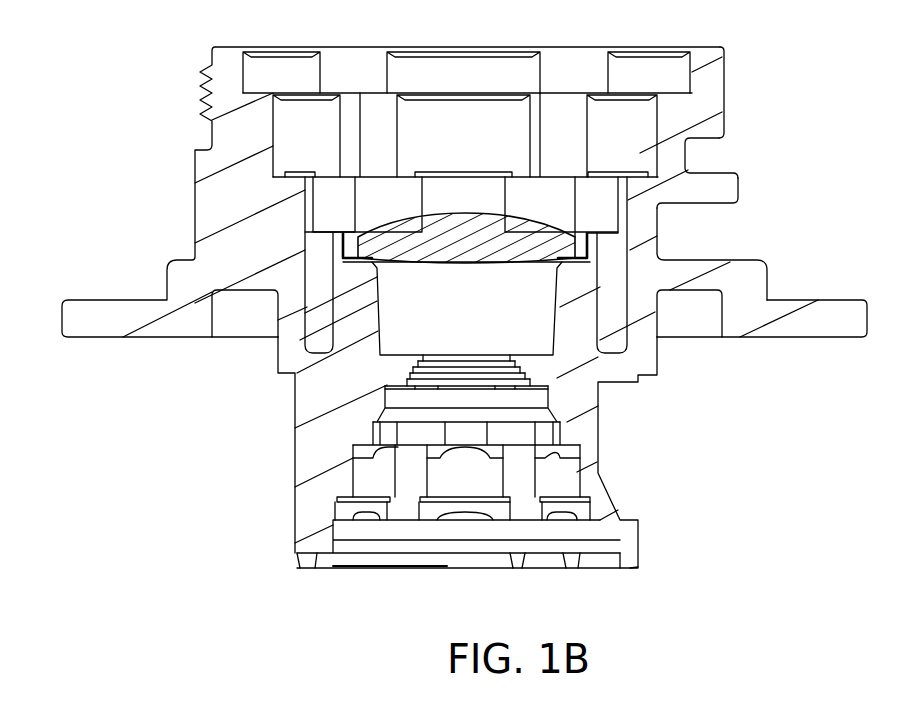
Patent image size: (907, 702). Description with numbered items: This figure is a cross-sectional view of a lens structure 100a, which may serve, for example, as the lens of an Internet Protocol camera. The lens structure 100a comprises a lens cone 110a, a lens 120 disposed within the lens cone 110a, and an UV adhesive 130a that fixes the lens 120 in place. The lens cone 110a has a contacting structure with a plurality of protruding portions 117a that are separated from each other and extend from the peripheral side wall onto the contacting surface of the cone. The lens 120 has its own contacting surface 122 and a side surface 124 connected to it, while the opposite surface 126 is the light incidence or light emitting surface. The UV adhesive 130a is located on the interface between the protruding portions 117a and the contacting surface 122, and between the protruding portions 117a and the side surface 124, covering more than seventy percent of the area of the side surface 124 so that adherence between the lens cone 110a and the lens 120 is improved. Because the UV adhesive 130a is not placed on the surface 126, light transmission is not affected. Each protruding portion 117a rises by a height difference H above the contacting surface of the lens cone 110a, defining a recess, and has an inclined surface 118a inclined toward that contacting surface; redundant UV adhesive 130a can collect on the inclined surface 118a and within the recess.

The lens structure 100a is at (468, 315).
The lens cone 110a is at (712, 100).
The protruding portions 117a is at (591, 243).
The inclined surface 118a is at (576, 223).
The height difference H is at (665, 230).
The lens 120 is at (384, 222).
The contacting surface 122 is at (356, 269).
The side surface 124 is at (349, 242).
The surface 126 is at (417, 235).
The UV adhesive 130a is at (577, 275).